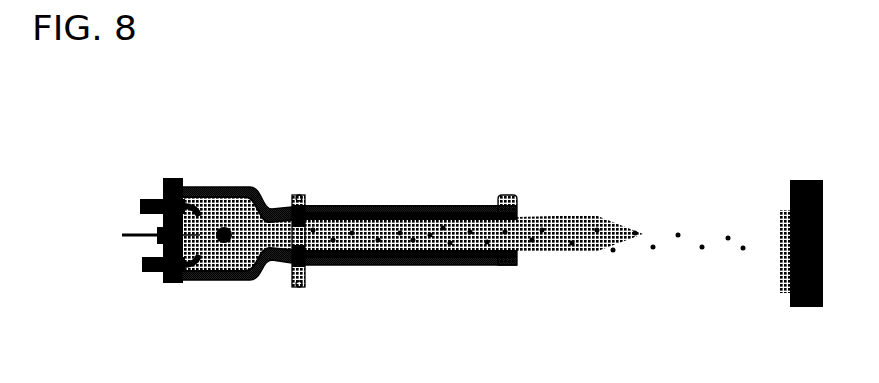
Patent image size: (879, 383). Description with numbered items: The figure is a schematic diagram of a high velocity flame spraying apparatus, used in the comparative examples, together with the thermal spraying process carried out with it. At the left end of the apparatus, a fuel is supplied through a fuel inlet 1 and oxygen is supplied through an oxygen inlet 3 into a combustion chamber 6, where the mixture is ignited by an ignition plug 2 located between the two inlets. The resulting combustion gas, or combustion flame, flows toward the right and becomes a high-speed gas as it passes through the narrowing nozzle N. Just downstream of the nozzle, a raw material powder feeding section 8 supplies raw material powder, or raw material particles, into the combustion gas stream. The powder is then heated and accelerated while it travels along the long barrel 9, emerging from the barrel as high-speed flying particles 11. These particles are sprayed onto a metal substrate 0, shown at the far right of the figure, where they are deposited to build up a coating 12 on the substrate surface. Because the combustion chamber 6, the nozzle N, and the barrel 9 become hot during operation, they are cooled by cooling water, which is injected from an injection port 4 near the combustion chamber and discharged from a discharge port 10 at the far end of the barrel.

The fuel inlet 1 is at (138, 204).
The ignition plug 2 is at (107, 238).
The oxygen inlet 3 is at (140, 264).
The injection port 4 is at (177, 177).
The nozzle N is at (280, 207).
The combustion chamber 6 is at (165, 305).
The raw material powder feeding section 8 is at (300, 195).
The barrel 9 is at (297, 305).
The discharge port 10 is at (505, 195).
The high-speed flying particles 11 is at (595, 222).
The coating 12 is at (787, 210).
The metal substrate 0 is at (807, 300).